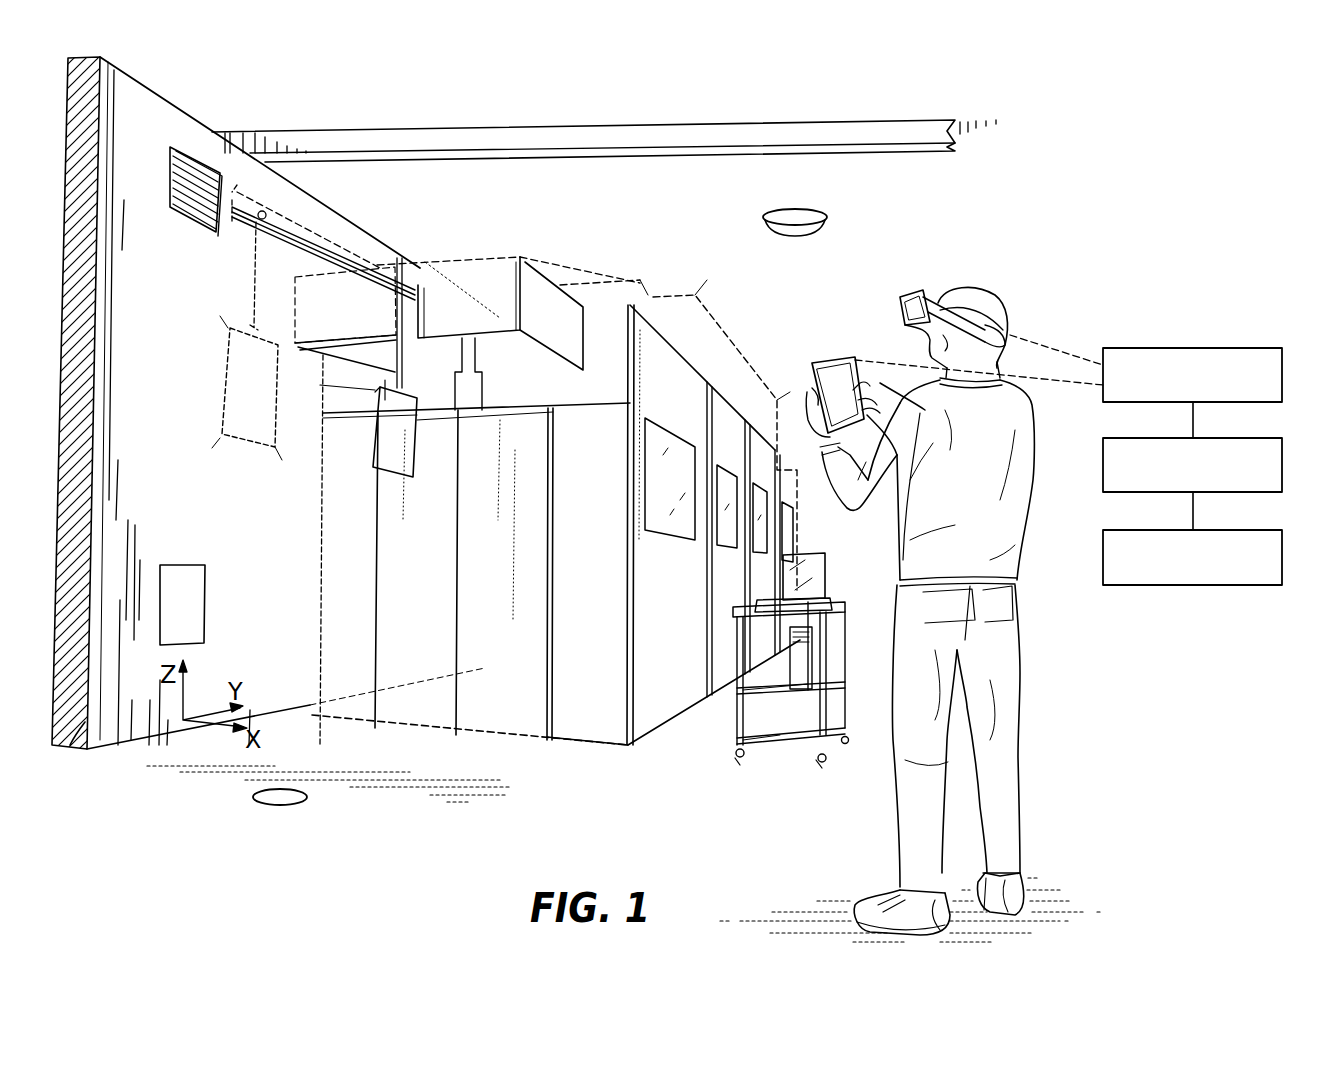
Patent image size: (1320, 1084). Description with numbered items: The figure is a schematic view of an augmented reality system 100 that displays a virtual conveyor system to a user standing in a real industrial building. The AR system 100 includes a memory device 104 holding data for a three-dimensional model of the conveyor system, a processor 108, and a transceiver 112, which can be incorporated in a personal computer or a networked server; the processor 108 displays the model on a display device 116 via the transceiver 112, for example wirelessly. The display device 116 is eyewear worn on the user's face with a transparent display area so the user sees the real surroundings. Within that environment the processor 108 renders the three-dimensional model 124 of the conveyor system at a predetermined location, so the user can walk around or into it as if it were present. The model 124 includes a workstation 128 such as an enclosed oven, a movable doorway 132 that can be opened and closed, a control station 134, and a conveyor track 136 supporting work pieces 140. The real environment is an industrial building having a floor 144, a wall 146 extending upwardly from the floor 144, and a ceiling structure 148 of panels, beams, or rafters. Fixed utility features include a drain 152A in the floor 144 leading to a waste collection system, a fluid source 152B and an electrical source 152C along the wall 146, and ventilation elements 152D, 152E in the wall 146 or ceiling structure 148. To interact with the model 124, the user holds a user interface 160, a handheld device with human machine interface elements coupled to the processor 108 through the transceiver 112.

The augmented reality system 100 is at (1062, 146).
The memory device 104 is at (1103, 558).
The processor 108 is at (1103, 466).
The transceiver 112 is at (1168, 347).
The display device 116 is at (928, 292).
The three-dimensional model 124 is at (568, 250).
The workstation 128 is at (675, 697).
The movable doorway 132 is at (432, 712).
The control station 134 is at (832, 585).
The conveyor track 136 is at (335, 250).
The work pieces 140 is at (238, 402).
The floor 144 is at (374, 837).
The wall 146 is at (256, 553).
The ceiling structure 148 is at (547, 138).
The drain 152A is at (268, 808).
The fluid source 152B is at (85, 725).
The electrical source 152C is at (185, 595).
The ventilation element 152D is at (200, 214).
The ventilation element 152E is at (766, 230).
The user interface 160 is at (828, 350).